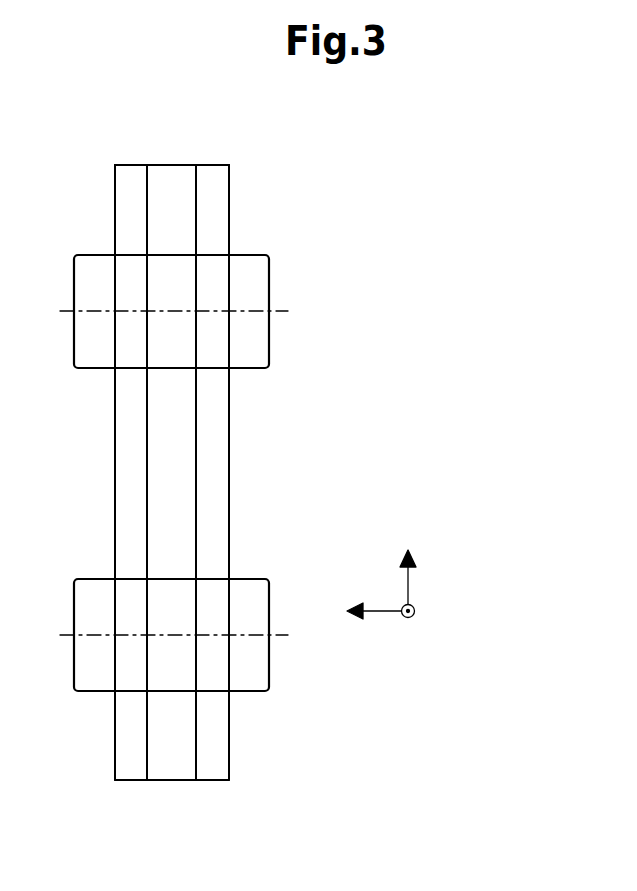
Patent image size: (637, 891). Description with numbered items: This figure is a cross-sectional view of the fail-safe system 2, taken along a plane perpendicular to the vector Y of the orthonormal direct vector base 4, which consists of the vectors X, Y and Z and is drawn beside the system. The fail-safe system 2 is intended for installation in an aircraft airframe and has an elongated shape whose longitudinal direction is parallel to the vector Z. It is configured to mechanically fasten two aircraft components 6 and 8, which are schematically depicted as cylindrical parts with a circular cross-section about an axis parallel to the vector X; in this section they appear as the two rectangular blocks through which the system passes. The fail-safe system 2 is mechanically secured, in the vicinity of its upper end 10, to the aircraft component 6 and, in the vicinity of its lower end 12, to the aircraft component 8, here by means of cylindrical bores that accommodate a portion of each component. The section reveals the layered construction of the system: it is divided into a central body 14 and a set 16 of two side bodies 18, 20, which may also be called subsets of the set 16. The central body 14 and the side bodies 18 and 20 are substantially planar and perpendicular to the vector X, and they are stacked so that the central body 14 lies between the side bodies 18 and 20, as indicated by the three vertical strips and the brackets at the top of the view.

The fail-safe system 2 is at (337, 262).
The orthonormal direct vector base 4 is at (438, 570).
The aircraft component 6 is at (269, 341).
The aircraft component 8 is at (247, 691).
The upper end 10 is at (218, 165).
The lower end 12 is at (213, 780).
The central body 14 is at (195, 131).
The set of two side bodies 16 is at (148, 146).
The side body 18 is at (125, 223).
The side body 20 is at (217, 223).